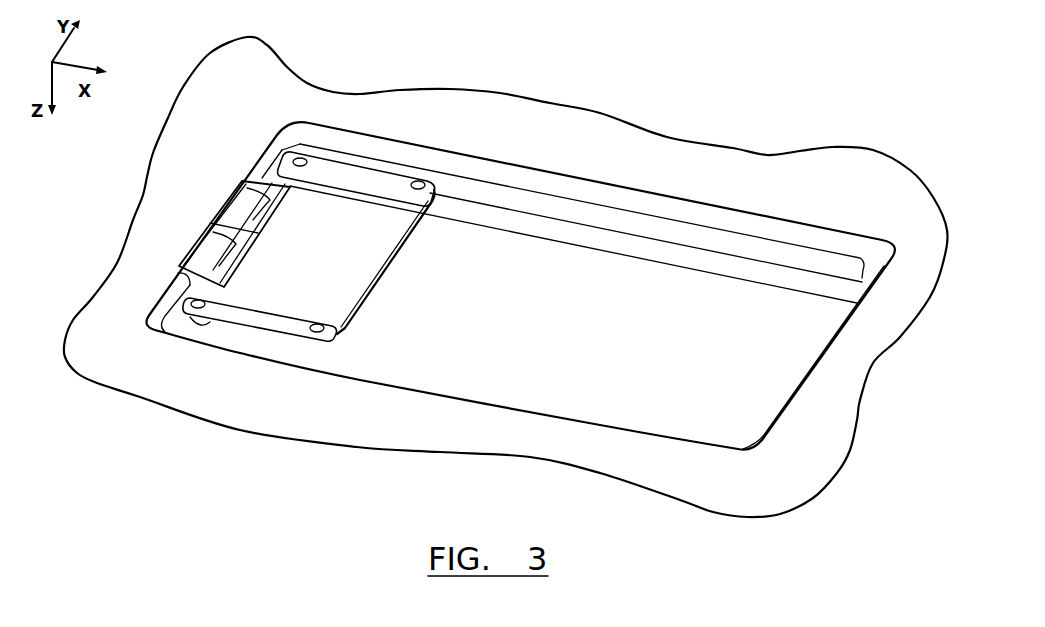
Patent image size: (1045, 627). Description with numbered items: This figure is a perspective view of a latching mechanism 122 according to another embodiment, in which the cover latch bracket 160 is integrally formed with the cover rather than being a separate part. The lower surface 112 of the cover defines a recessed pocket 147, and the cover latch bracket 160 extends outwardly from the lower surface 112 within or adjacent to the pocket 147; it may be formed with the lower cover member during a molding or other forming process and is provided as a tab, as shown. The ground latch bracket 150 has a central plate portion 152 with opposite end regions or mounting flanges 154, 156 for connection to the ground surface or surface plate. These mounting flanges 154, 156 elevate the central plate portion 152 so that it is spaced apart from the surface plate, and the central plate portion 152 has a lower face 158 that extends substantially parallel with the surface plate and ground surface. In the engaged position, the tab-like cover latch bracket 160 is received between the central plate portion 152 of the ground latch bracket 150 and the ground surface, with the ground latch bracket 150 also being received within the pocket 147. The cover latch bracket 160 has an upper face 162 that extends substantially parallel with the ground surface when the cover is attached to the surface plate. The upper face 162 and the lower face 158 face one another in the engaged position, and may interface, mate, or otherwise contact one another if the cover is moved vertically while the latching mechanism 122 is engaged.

The lower surface of the cover 112 is at (252, 396).
The latching mechanism 122 is at (506, 277).
The recessed pocket 147 is at (548, 338).
The ground latch bracket 150 is at (295, 264).
The central plate portion 152 is at (387, 345).
The end region (mounting flange) 154 is at (225, 310).
The end region (mounting flange) 156 is at (343, 175).
The lower face 158 is at (350, 280).
The cover latch bracket 160 is at (223, 234).
The upper face 162 is at (280, 232).